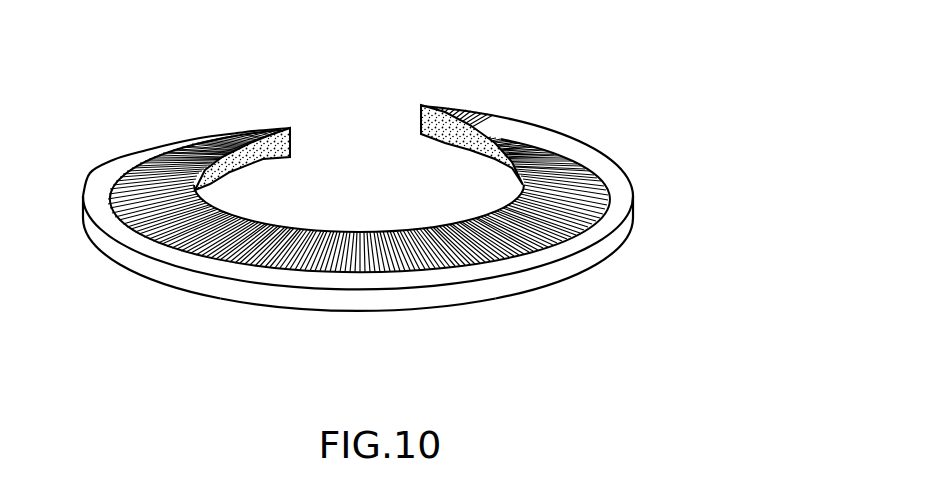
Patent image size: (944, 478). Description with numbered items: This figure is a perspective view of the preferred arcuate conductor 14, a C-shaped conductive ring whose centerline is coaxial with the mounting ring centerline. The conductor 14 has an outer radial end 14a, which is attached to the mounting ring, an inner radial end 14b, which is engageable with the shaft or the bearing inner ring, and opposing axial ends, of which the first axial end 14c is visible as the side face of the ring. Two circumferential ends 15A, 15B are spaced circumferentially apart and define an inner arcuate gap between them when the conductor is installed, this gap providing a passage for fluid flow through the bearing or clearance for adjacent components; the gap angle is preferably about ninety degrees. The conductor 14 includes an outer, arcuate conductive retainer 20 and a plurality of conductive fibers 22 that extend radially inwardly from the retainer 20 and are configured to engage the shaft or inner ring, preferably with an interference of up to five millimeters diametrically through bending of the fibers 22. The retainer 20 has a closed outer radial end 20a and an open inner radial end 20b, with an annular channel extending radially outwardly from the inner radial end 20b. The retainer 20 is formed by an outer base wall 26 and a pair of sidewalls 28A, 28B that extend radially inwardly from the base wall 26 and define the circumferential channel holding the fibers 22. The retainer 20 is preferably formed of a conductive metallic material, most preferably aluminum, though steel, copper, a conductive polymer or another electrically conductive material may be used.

The arcuate conductor 14 is at (412, 225).
The outer radial end 14a is at (511, 300).
The inner radial end 14b is at (283, 212).
The first axial end 14c is at (636, 191).
The circumferential end 15A is at (293, 140).
The circumferential end 15B is at (416, 116).
The arcuate conductive retainer 20 is at (412, 275).
The closed outer radial end 20a is at (300, 326).
The open inner radial end 20b is at (558, 269).
The conductive fibers 22 is at (182, 158).
The outer base wall 26 is at (183, 280).
The sidewall 28A is at (598, 170).
The sidewall 28B is at (232, 302).